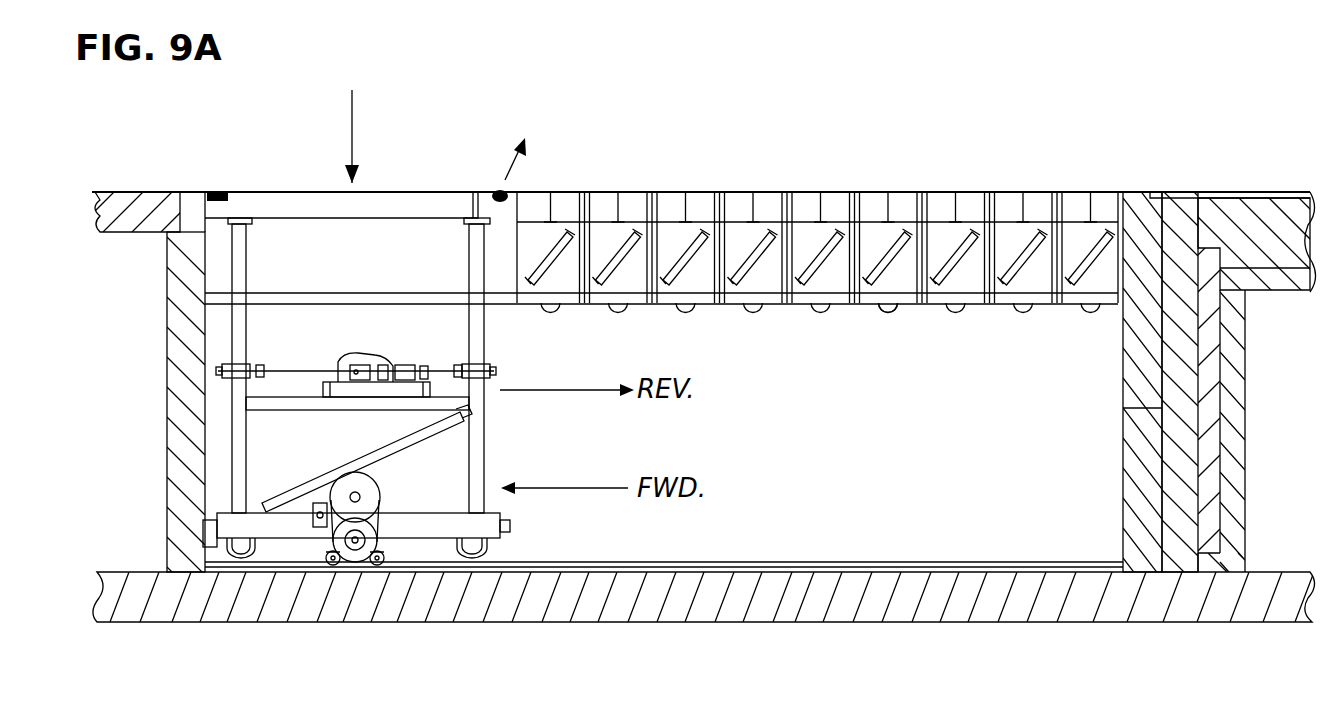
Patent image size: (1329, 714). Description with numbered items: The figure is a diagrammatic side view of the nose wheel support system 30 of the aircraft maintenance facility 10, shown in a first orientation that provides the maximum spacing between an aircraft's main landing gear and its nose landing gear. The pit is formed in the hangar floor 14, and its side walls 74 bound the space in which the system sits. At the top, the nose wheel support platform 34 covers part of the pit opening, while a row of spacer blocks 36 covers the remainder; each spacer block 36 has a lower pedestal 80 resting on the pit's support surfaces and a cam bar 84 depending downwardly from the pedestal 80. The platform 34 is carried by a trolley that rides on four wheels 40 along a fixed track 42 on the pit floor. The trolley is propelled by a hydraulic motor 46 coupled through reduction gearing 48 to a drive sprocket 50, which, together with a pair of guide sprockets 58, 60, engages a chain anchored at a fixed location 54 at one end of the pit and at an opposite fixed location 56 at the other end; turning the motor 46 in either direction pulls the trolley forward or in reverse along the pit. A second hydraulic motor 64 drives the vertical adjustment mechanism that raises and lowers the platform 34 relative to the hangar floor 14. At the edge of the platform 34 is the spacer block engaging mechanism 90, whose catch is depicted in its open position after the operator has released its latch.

The facility 10 is at (800, 125).
The floor 14 is at (115, 192).
The nose wheel support system 30 is at (878, 178).
The nose wheel support platform 34 is at (440, 192).
The spacer blocks 36 is at (605, 190).
The wheels 40 is at (223, 548).
The fixed track 42 is at (975, 572).
The hydraulic motor 46 is at (322, 478).
The reduction gearing 48 is at (395, 490).
The drive sprocket 50 is at (353, 552).
The fixed location 54 is at (178, 432).
The fixed location 56 is at (1138, 492).
The guide sprocket 58 is at (322, 565).
The guide sprocket 60 is at (372, 564).
The hydraulic motor 64 is at (365, 355).
The side walls 74 is at (802, 444).
The lower pedestal 80 is at (637, 305).
The cam bar 84 is at (880, 313).
The spacer block engaging mechanism 90 is at (525, 170).